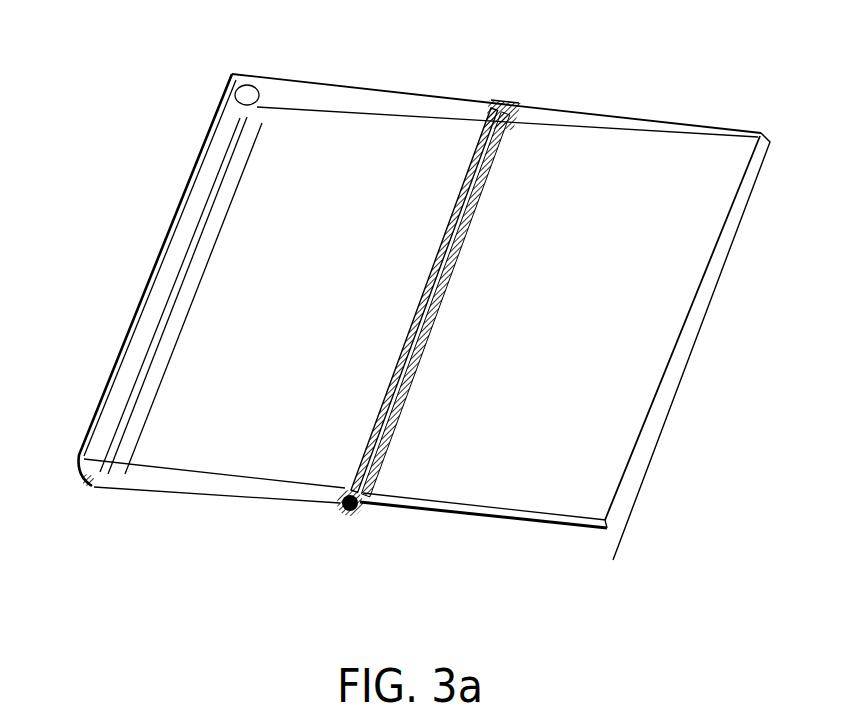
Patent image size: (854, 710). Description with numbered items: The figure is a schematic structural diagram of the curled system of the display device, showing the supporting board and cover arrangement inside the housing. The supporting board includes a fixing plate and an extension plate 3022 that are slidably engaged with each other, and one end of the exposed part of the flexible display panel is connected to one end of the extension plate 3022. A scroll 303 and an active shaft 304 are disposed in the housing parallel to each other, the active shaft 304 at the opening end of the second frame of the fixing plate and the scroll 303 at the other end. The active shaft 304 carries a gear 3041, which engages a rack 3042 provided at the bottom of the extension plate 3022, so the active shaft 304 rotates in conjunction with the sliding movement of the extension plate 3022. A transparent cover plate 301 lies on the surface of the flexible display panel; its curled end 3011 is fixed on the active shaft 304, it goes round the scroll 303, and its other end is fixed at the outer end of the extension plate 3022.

The transparent cover plate 301 is at (335, 150).
The extension plate 3022 is at (633, 115).
The scroll 303 is at (172, 272).
The curled end 3011 is at (167, 481).
The active shaft 304 is at (348, 452).
The gear 3041 is at (348, 505).
The rack 3042 is at (484, 506).